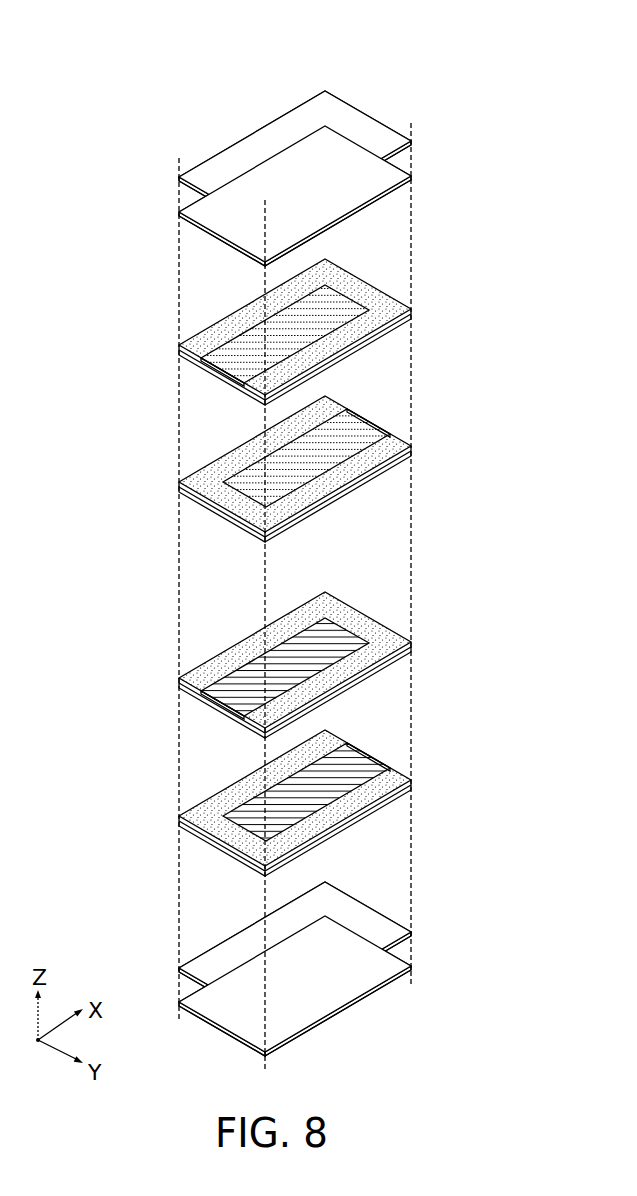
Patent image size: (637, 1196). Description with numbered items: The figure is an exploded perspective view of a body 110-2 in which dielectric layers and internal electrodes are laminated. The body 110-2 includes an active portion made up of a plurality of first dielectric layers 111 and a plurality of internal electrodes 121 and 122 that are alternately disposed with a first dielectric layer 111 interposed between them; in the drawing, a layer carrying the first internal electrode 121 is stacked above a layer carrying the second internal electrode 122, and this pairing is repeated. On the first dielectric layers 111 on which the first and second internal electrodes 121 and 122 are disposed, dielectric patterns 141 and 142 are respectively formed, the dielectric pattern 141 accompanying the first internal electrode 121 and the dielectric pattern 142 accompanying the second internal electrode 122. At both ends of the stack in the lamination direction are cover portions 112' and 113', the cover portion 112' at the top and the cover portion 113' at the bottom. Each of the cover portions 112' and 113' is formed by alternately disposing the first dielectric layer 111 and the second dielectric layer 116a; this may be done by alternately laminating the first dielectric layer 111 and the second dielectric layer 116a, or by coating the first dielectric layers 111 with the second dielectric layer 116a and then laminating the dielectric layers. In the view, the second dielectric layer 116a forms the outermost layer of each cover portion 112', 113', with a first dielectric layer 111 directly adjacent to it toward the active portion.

The body 110-2 is at (203, 62).
The cover portion 112' is at (237, 178).
The cover portion 113' is at (238, 969).
The second dielectric layer 116a is at (384, 131).
The first dielectric layer 111 is at (382, 175).
The first internal electrode 121 is at (238, 350).
The second internal electrode 122 is at (367, 417).
The dielectric pattern 141 is at (200, 344).
The dielectric pattern 142 is at (392, 447).